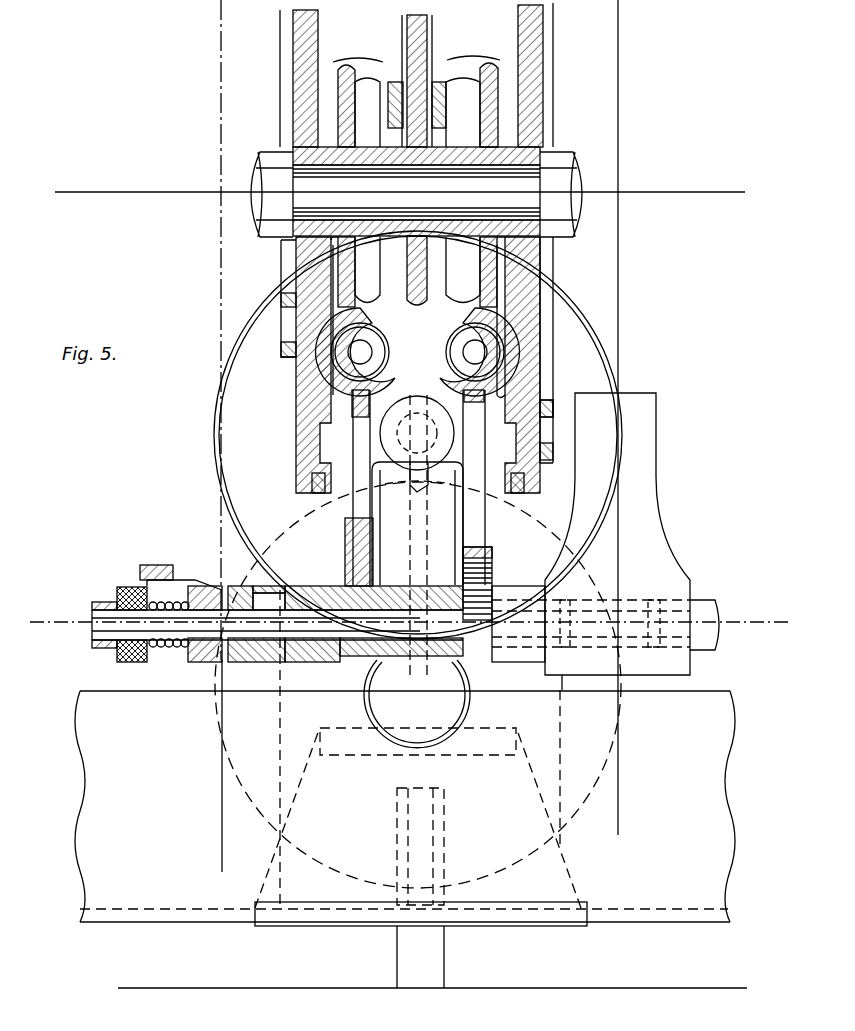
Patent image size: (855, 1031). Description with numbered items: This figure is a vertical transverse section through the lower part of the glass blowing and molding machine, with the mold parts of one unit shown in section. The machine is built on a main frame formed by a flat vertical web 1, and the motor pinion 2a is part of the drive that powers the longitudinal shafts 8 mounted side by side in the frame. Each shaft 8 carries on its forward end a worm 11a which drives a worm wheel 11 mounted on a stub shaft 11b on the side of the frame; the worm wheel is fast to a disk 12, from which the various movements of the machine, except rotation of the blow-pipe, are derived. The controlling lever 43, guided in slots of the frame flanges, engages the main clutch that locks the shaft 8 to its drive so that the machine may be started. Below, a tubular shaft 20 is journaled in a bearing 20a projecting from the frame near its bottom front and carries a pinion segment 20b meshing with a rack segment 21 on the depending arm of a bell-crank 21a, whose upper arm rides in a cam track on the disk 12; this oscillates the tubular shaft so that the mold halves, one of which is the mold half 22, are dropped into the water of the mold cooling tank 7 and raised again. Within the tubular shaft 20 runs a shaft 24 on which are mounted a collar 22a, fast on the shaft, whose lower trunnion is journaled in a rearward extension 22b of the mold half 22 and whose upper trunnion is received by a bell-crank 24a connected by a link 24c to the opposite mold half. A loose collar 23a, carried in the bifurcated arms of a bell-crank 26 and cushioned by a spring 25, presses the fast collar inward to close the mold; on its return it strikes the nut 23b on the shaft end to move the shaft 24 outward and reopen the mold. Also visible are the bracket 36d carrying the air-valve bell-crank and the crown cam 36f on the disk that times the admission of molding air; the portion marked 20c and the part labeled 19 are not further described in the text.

The web 1 is at (420, 52).
The pinion 2a is at (232, 752).
The mold cooling tank 7 is at (122, 767).
The shaft 8 is at (358, 352).
The worm wheel 11 is at (350, 112).
The worm 11a is at (340, 372).
The stub shaft 11b is at (495, 200).
The disk 12 is at (300, 112).
The disc 19 is at (287, 253).
The tubular shaft 20 is at (290, 604).
The bearing 20a is at (313, 662).
The pinion segment 20b is at (420, 690).
The housing recess 20c is at (250, 640).
The rack segment 21 is at (346, 580).
The bell-crank 21a is at (400, 486).
The mold half 22 is at (698, 529).
The collar 22a is at (200, 650).
The rearward extension 22b is at (221, 710).
The collar 23a is at (120, 655).
The nut 23b is at (117, 598).
The shaft 24 is at (100, 624).
The bell-crank 24a is at (152, 588).
The link 24c is at (170, 556).
The spring 25 is at (175, 604).
The bell-crank 26 is at (115, 596).
The bracket 36d is at (556, 470).
The crown cam 36f is at (314, 478).
The controlling lever 43 is at (392, 92).